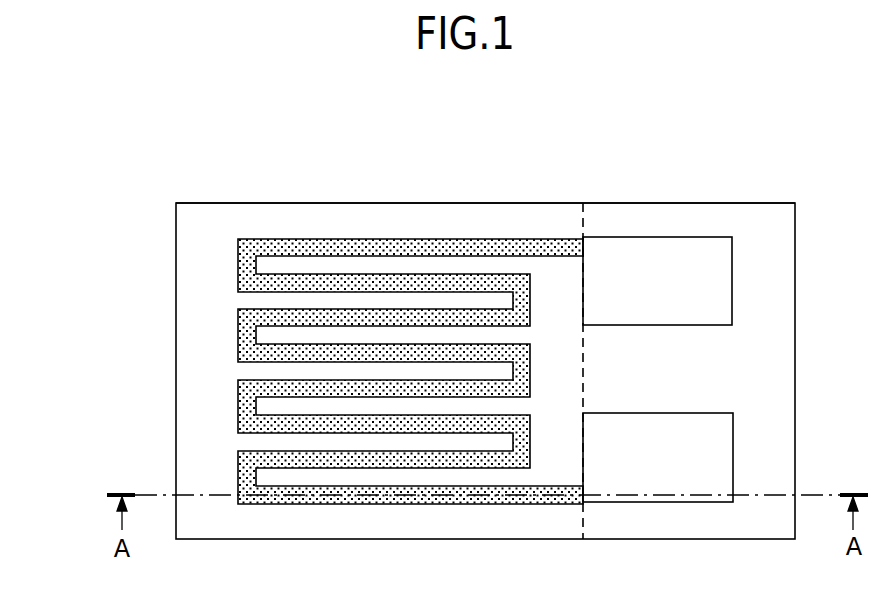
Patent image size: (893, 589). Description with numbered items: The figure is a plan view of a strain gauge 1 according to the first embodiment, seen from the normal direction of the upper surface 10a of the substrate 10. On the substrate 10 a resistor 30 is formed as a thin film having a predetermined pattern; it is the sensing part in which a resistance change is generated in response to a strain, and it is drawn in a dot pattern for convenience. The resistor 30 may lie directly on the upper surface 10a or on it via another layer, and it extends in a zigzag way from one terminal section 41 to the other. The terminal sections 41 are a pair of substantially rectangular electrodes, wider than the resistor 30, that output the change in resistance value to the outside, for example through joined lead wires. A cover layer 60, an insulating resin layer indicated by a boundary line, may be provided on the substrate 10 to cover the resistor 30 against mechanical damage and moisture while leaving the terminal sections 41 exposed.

The strain gauge 1 is at (70, 156).
The substrate 10 is at (232, 200).
The upper surface of the substrate 10a is at (316, 222).
The resistor 30 is at (440, 247).
The terminal section 41 is at (670, 263).
The cover layer 60 is at (588, 220).